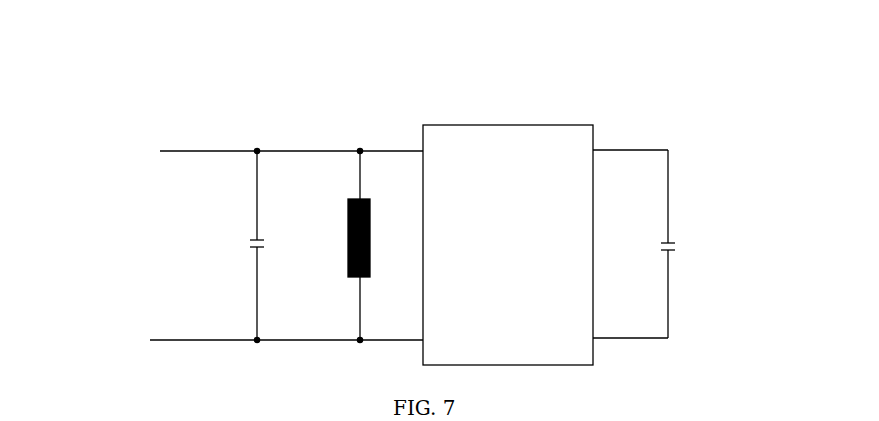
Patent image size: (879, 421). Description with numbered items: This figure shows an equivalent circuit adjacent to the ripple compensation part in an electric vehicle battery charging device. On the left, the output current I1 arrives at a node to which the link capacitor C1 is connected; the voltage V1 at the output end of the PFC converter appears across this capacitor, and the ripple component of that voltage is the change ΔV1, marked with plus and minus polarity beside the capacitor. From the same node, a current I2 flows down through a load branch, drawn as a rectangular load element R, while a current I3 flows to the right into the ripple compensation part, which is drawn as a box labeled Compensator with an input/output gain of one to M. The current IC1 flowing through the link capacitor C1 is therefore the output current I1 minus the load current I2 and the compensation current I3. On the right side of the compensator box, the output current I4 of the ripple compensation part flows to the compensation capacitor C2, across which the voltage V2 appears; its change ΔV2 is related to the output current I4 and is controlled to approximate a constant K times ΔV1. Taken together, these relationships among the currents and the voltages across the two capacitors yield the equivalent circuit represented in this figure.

The input/output gain of the ripple compensation part M is at (508, 228).
The link capacitor C1 is at (267, 245).
The compensation capacitor C2 is at (677, 244).
The voltage at the output end of the PFC converter V1 is at (217, 247).
The voltage at both ends of the compensation capacitor V2 is at (638, 245).
The current flowing through the link capacitor IC1 is at (248, 292).
The output current I1 is at (197, 143).
The current flowing to a load I2 is at (367, 155).
The current flowing to the ripple compensation part I3 is at (406, 143).
The output current of the ripple compensation part I4 is at (642, 143).
The load resistor R is at (359, 245).